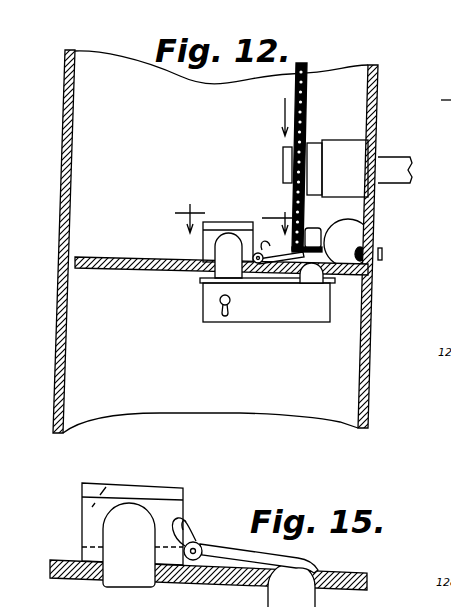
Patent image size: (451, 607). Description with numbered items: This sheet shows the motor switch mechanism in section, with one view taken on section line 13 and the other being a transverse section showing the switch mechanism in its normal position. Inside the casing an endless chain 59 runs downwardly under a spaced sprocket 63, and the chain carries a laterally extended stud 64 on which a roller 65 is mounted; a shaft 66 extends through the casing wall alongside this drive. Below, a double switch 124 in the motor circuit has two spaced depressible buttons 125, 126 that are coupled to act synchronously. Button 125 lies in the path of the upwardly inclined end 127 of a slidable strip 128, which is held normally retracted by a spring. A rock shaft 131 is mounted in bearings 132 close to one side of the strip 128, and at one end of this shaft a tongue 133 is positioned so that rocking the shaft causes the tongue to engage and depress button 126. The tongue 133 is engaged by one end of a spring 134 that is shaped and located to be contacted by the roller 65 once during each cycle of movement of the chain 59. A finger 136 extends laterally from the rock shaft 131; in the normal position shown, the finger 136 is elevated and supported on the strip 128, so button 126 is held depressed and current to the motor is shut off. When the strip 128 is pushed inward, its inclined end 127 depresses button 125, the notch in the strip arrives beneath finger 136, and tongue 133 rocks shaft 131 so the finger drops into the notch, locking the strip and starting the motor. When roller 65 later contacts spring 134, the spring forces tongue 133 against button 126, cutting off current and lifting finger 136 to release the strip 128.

In FIG. 12, the section line 13- 13 is at (233, 211).
In FIG. 12, the endless chain 59 is at (308, 92).
In FIG. 12, the sprocket 63 is at (286, 153).
In FIG. 12, the laterally extended stud 64 is at (362, 234).
In FIG. 12, the roller 65 is at (313, 228).
In FIG. 12, the shaft 66 is at (411, 166).
In FIG. 12, the double switch 124 is at (262, 320).
In FIG. 12, the depressible button 125 is at (226, 250).
In FIG. 15, the depressible button 125 is at (129, 545).
In FIG. 12, the depressible button 126 is at (313, 281).
In FIG. 15, the depressible button 126 is at (291, 585).
In FIG. 12, the upwardly inclined end 127 is at (228, 228).
In FIG. 15, the upwardly inclined end 127 is at (153, 488).
In FIG. 15, the slidable strip 128 is at (82, 548).
In FIG. 15, the rock shaft 131 is at (158, 578).
In FIG. 15, the bearings 132 is at (200, 546).
In FIG. 12, the tongue 133 is at (291, 276).
In FIG. 15, the tongue 133 is at (238, 557).
In FIG. 12, the spring 134 is at (376, 269).
In FIG. 12, the finger 136 is at (262, 256).
In FIG. 15, the finger 136 is at (192, 528).